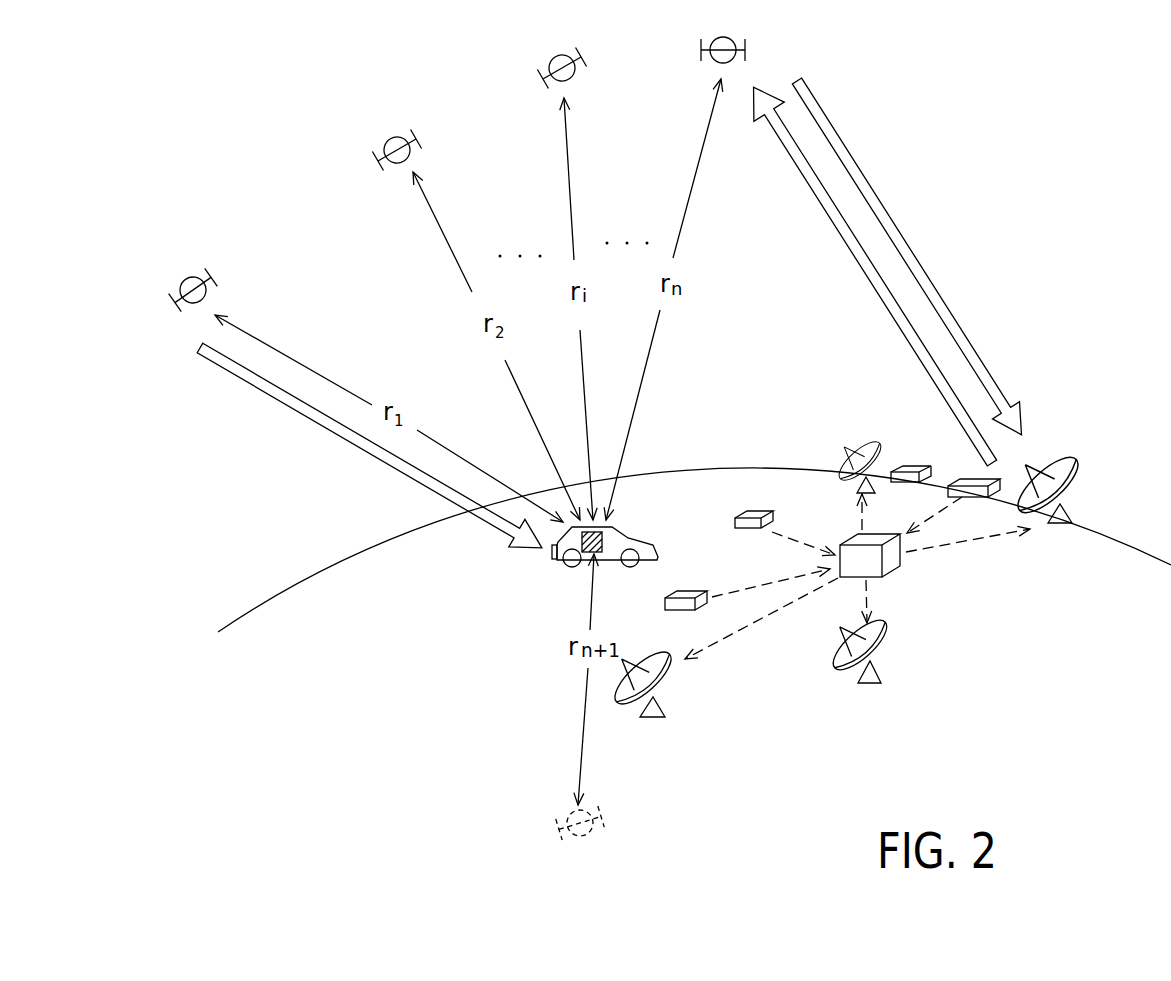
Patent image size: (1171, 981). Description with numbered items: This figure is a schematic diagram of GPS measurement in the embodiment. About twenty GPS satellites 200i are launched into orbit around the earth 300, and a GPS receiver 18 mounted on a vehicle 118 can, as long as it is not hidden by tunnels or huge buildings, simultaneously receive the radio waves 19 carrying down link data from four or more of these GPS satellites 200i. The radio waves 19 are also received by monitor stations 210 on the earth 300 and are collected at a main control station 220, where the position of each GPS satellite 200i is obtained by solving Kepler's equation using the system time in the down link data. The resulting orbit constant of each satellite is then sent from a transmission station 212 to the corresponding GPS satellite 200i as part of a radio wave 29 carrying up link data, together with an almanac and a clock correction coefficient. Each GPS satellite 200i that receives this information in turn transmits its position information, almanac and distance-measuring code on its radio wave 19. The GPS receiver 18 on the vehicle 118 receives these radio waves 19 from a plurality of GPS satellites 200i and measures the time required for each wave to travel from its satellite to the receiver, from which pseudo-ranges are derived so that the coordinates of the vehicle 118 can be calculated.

The GPS receiver 18 is at (606, 536).
The radio wave 19 is at (313, 427).
The radio wave 29 is at (813, 210).
The vehicle 118 is at (567, 563).
The GPS satellite 200i is at (545, 60).
The monitor station 210 is at (683, 598).
The transmission station 212 is at (672, 680).
The main control station 220 is at (897, 564).
The earth 300 is at (272, 607).